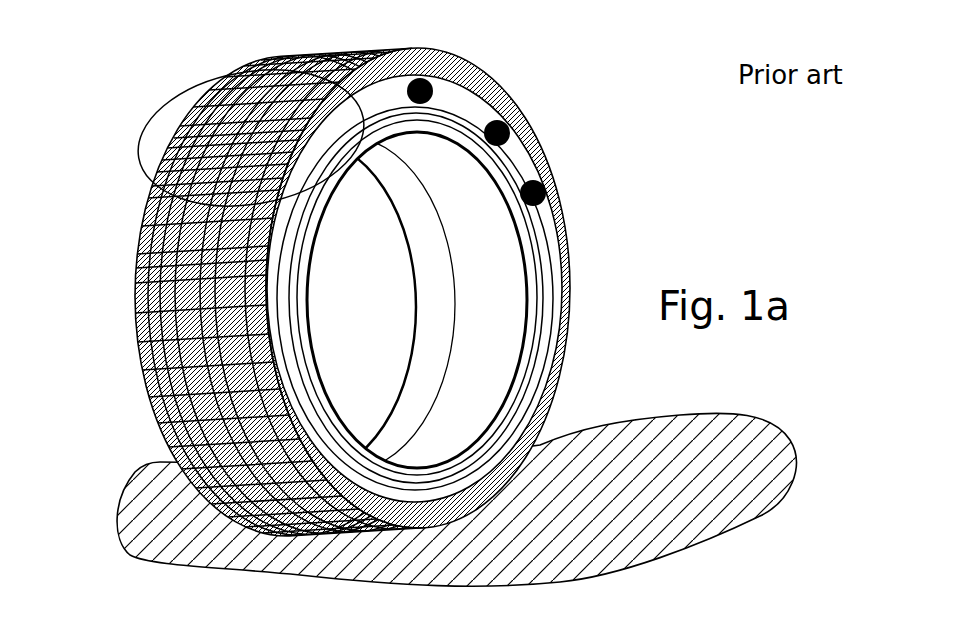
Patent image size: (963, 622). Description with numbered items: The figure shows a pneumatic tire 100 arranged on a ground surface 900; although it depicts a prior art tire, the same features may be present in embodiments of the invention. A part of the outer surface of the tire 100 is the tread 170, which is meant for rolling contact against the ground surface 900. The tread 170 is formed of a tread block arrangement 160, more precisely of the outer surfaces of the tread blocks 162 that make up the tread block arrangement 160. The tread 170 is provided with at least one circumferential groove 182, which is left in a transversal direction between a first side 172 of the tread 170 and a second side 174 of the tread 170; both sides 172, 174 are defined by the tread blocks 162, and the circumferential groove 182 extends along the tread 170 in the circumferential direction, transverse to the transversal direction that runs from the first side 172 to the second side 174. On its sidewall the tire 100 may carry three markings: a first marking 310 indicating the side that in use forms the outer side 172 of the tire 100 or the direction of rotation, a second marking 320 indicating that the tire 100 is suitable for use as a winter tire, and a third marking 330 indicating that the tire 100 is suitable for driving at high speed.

The pneumatic tire 100 is at (396, 268).
The tread block arrangement 160 is at (155, 114).
The tread blocks 162 is at (176, 197).
The tread 170 is at (330, 34).
The first side of the tread (outer side) 172 is at (557, 354).
The second side of the tread 174 is at (121, 252).
The circumferential groove 182 is at (140, 355).
The first marking 310 is at (432, 86).
The second marking 320 is at (509, 130).
The third marking 330 is at (546, 193).
The ground surface 900 is at (663, 506).